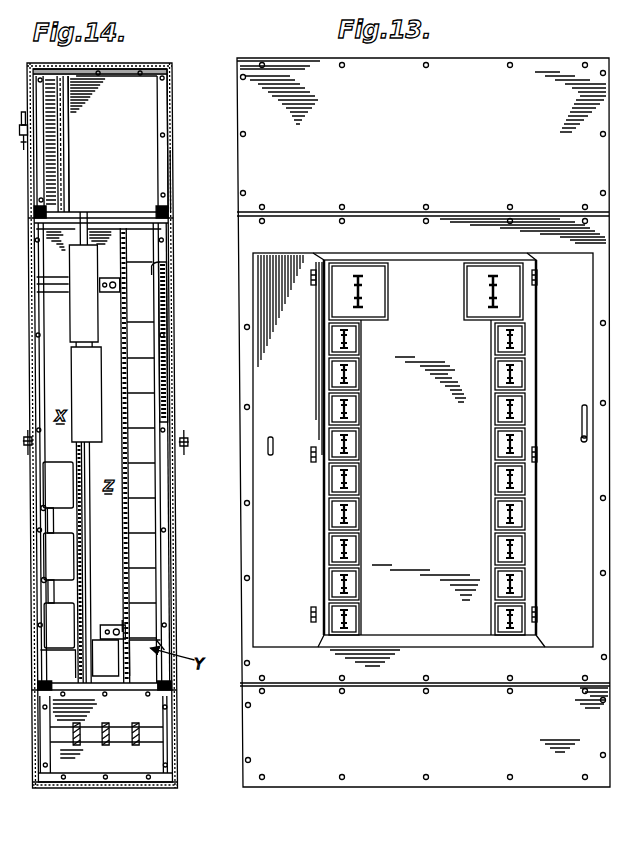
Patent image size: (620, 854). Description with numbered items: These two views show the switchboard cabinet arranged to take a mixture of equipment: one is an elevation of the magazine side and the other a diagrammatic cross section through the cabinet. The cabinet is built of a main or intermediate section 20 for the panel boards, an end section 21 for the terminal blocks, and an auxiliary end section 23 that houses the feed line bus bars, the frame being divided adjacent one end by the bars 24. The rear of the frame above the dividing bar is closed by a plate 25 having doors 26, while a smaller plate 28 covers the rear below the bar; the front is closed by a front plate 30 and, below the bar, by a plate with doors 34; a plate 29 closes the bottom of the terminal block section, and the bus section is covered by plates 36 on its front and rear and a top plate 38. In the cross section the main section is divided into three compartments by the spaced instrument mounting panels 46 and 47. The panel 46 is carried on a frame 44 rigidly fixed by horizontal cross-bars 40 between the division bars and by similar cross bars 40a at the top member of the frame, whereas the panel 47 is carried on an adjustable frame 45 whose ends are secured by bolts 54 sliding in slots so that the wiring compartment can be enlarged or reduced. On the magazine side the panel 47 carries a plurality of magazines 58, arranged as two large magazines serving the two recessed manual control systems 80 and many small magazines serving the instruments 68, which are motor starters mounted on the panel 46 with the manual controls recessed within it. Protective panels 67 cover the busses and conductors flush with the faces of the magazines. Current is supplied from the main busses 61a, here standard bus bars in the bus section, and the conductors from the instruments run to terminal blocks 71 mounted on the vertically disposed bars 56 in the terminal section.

In FIG. 14, the main or intermediate section 20 is at (150, 270).
In FIG. 13, the main or intermediate section 20 is at (275, 387).
In FIG. 14, the end section 21 is at (118, 124).
In FIG. 13, the end section 21 is at (260, 155).
In FIG. 14, the auxiliary end section 23 is at (58, 758).
In FIG. 13, the auxiliary end section 23 is at (268, 711).
In FIG. 14, the bars 24 is at (173, 201).
In FIG. 14, the plate 25 is at (175, 231).
In FIG. 13, the plate 25 is at (257, 241).
In FIG. 13, the doors 26 is at (262, 617).
In FIG. 14, the smaller plate 28 is at (172, 148).
In FIG. 13, the smaller plate 28 is at (436, 128).
In FIG. 14, the plate 29 is at (155, 63).
In FIG. 14, the front plate 30 is at (35, 248).
In FIG. 14, the doors 34 is at (37, 103).
In FIG. 14, the plates 36 is at (34, 725).
In FIG. 13, the plates 36 is at (258, 740).
In FIG. 14, the top plate 38 is at (172, 787).
In FIG. 14, the horizontal cross-bars 40 is at (115, 222).
In FIG. 14, the cross bars 40a is at (115, 676).
In FIG. 14, the frame 44 is at (86, 598).
In FIG. 14, the frame 45 is at (115, 279).
In FIG. 14, the instrument mounting panel 46 is at (78, 668).
In FIG. 14, the instrument mounting panel 47 is at (131, 668).
In FIG. 14, the bolts 54 is at (121, 289).
In FIG. 14, the vertically disposed bars 56 is at (66, 157).
In FIG. 14, the magazines 58 is at (148, 378).
In FIG. 13, the magazines 58 is at (343, 273).
In FIG. 14, the main busses 61a is at (132, 746).
In FIG. 14, the protective panels 67 is at (159, 528).
In FIG. 13, the protective panels 67 is at (432, 538).
In FIG. 14, the instruments 68 is at (58, 477).
In FIG. 14, the terminal blocks 71 is at (58, 117).
In FIG. 14, the manual control systems 80 is at (82, 367).